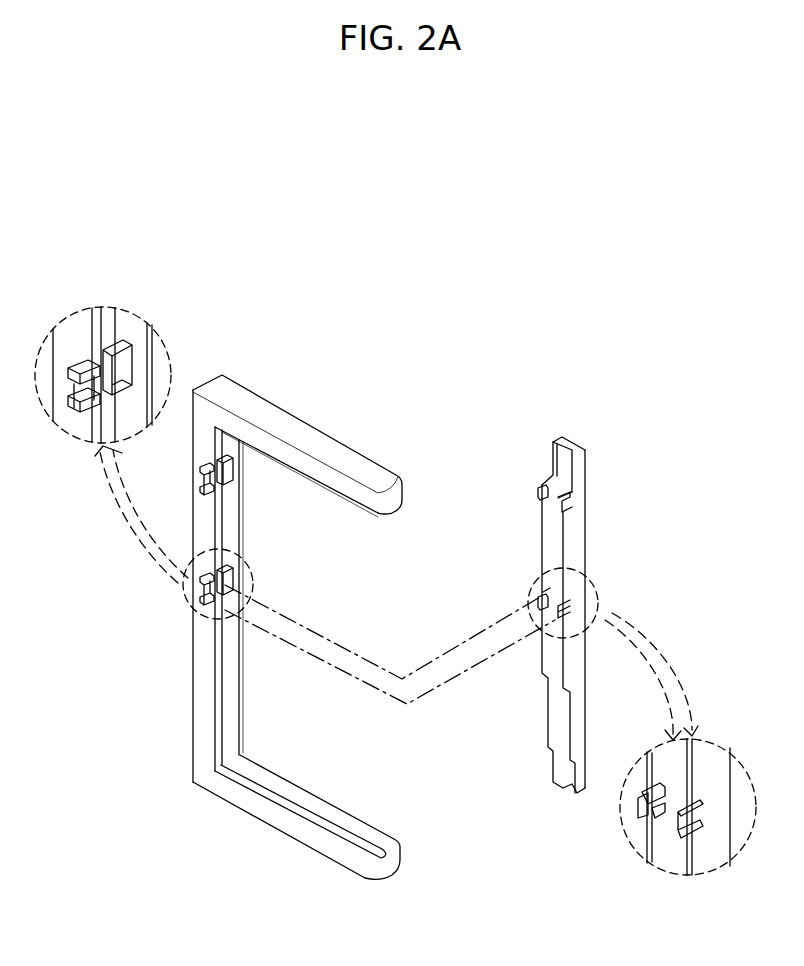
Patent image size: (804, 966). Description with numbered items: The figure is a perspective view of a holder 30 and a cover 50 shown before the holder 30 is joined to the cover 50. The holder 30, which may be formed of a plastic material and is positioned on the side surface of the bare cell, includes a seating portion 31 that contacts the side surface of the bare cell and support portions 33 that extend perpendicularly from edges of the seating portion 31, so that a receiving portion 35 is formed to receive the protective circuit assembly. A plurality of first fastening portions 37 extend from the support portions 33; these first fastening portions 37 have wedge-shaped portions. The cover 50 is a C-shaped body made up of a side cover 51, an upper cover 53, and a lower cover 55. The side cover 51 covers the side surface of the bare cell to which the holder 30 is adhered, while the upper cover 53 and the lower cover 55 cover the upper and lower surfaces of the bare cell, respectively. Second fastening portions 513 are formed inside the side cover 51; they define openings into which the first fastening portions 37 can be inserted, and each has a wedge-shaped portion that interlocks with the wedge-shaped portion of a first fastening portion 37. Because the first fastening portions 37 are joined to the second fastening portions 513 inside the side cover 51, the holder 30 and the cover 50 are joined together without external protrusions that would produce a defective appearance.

The holder 30 is at (613, 644).
The seating portion 31 is at (573, 443).
The support portion 33 is at (582, 465).
The receiving portion 35 is at (557, 537).
The first fastening portion 37 is at (675, 832).
The cover 50 is at (218, 589).
The side cover 51 is at (205, 680).
The upper cover 53 is at (346, 451).
The lower cover 55 is at (290, 828).
The second fastening portion 513 is at (120, 342).